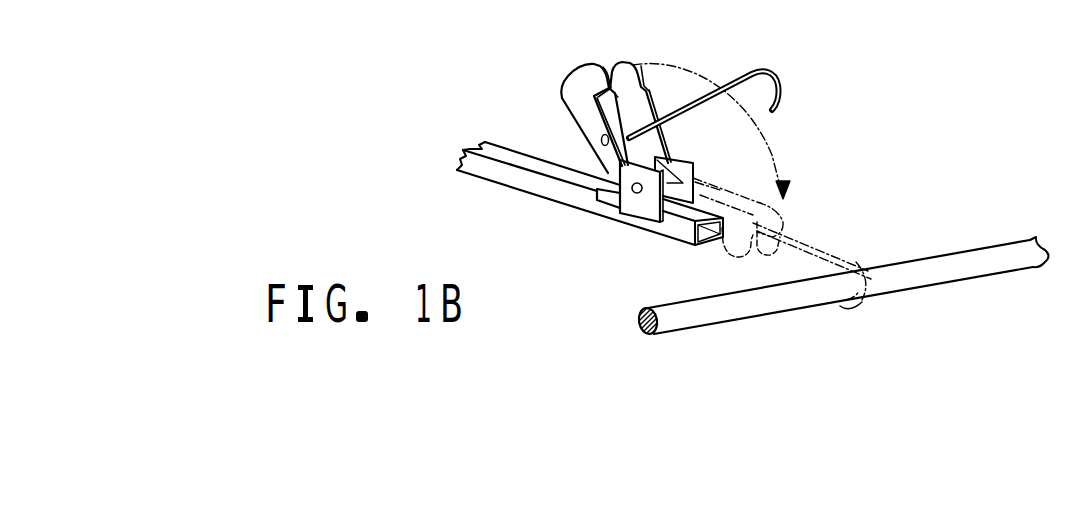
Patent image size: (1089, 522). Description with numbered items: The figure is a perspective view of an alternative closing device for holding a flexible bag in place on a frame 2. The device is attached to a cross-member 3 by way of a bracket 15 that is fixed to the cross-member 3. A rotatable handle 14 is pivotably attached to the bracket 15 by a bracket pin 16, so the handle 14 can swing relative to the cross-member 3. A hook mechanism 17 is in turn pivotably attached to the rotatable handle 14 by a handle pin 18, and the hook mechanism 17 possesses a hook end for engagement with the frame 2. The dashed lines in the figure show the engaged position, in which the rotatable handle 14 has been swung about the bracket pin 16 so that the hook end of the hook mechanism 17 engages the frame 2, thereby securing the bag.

The frame 2 is at (953, 282).
The cross-member 3 is at (528, 195).
The rotatable handle 14 is at (633, 101).
The bracket 15 is at (613, 201).
The bracket pin 16 is at (637, 194).
The hook mechanism 17 is at (783, 82).
The handle pin 18 is at (601, 140).